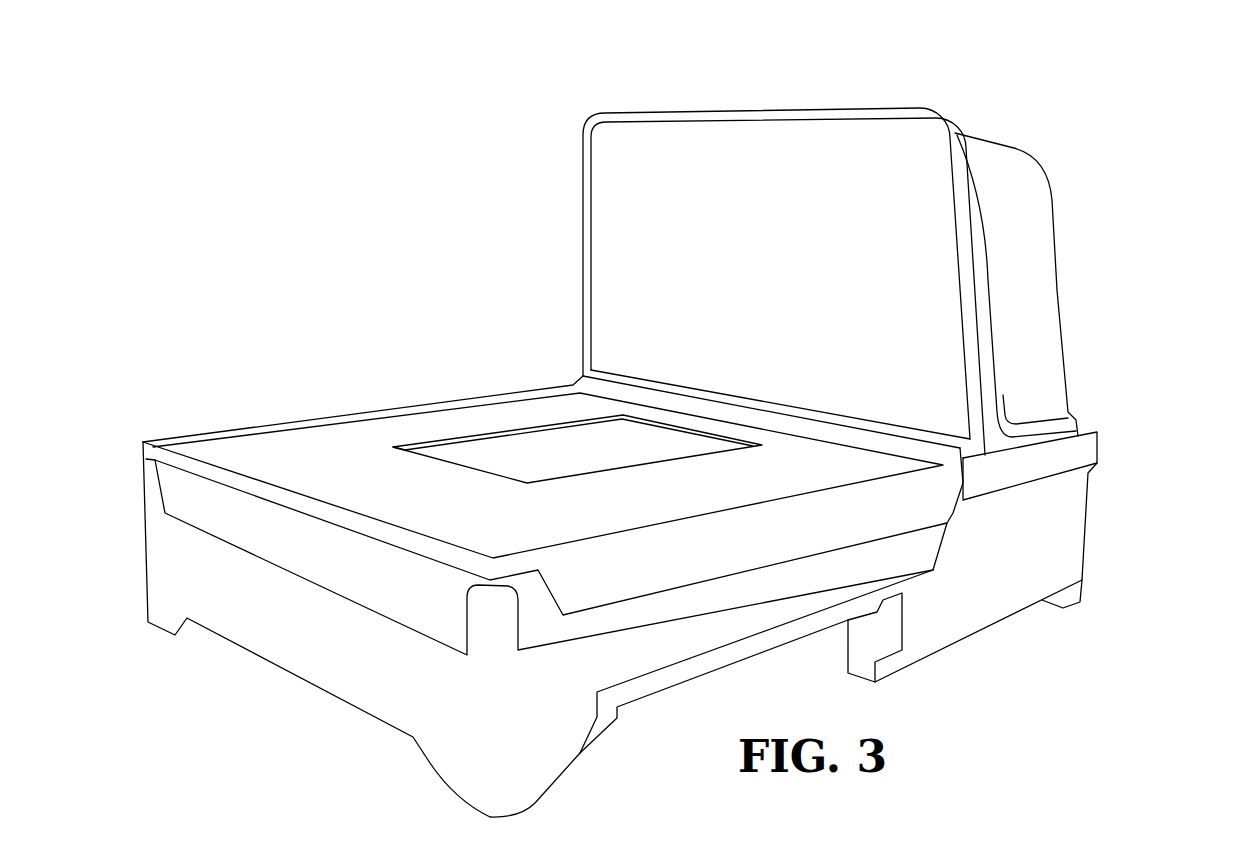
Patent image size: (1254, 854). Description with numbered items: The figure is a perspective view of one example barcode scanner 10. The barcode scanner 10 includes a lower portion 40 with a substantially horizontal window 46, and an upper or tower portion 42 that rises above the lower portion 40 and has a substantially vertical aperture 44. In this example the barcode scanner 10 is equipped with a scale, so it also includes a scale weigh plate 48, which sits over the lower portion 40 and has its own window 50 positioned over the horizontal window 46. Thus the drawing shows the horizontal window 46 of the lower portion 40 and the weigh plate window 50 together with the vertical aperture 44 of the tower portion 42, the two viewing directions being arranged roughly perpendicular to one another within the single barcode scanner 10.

The barcode scanner 10 is at (1128, 108).
The lower portion 40 is at (1048, 526).
The upper or tower portion 42 is at (1035, 302).
The substantially vertical aperture 44 is at (600, 190).
The substantially horizontal window 46 is at (565, 445).
The scale weigh plate 48 is at (207, 437).
The window 50 is at (437, 440).